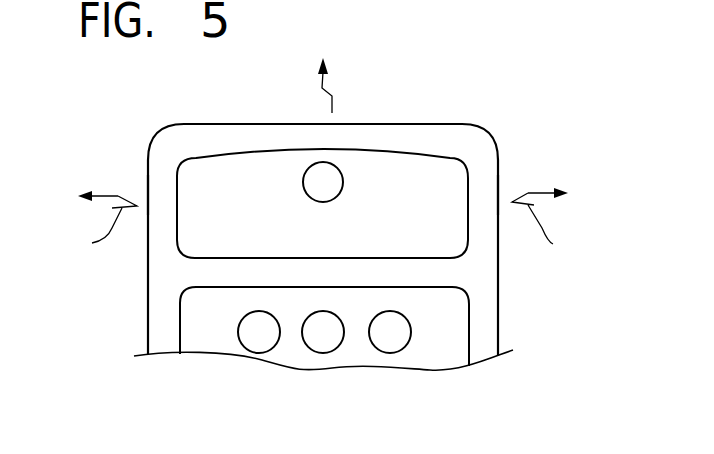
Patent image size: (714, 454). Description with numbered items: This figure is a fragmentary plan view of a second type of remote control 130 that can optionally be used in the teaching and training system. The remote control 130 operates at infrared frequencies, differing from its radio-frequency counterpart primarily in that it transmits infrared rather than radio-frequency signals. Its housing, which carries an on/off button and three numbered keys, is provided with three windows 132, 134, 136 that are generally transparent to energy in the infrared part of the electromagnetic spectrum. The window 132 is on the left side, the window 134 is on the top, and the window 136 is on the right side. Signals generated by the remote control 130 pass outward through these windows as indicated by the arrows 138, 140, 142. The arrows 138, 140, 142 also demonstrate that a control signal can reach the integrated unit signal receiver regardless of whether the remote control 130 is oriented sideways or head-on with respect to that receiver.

The remote control 130 is at (148, 130).
The window 132 is at (147, 192).
The window 134 is at (353, 124).
The window 136 is at (500, 193).
The arrow 138 is at (87, 224).
The arrow 140 is at (320, 87).
The arrow 142 is at (555, 222).